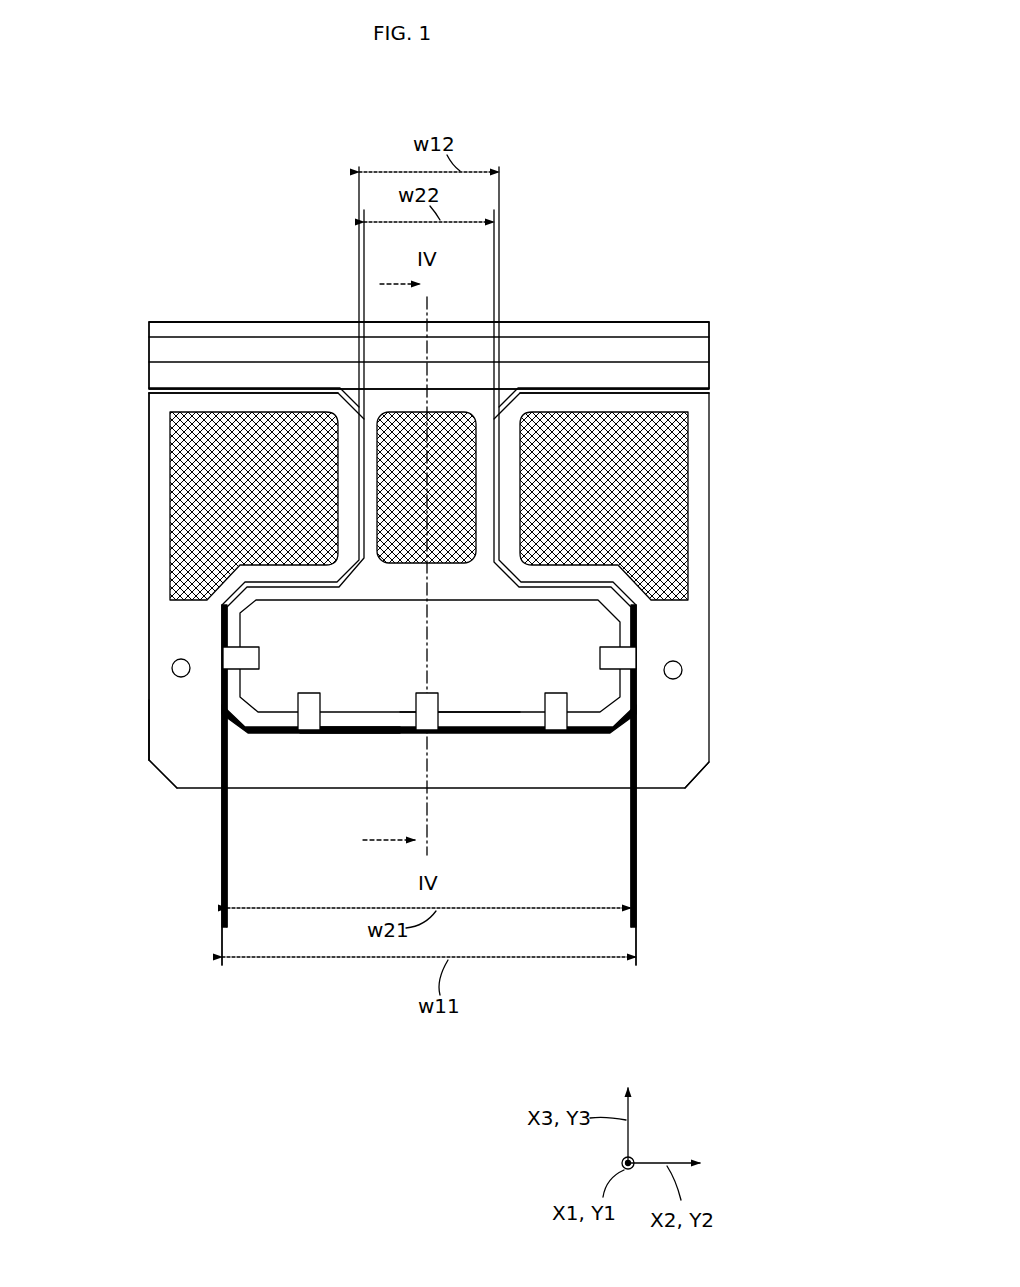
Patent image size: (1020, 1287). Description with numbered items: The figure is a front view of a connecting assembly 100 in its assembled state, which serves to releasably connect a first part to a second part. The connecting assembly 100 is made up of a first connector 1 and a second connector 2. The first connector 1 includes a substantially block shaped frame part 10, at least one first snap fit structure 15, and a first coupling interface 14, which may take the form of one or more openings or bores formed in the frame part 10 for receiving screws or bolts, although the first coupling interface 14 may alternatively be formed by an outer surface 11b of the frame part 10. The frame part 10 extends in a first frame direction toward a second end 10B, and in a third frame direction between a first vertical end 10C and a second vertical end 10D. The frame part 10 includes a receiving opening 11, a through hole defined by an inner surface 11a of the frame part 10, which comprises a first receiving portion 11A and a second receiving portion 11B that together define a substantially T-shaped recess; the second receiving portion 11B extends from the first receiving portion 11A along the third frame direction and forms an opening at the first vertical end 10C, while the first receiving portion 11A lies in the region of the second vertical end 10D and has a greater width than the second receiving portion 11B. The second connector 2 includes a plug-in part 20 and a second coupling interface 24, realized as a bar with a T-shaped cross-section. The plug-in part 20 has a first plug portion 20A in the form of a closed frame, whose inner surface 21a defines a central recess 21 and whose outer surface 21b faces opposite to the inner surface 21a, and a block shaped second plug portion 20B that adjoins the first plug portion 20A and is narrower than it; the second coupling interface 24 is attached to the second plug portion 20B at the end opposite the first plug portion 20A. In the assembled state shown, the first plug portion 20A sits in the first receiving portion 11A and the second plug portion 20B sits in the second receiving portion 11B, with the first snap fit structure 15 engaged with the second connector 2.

The connecting assembly 100 is at (146, 134).
The first connector 1 is at (147, 625).
The second connector 2 is at (144, 372).
The second coupling interface 24 is at (232, 318).
The frame part 10 is at (153, 537).
The second end 10B is at (657, 757).
The first vertical end 10C is at (590, 388).
The second vertical end 10D is at (190, 790).
The receiving opening 11 is at (262, 724).
The first receiving portion 11A is at (219, 693).
The second receiving portion 11B is at (356, 466).
The inner surface 11a is at (370, 722).
The outer surface 11b is at (170, 760).
The first coupling interface 14 is at (185, 677).
The first snap fit structure 15 is at (228, 657).
The plug-in part 20 is at (498, 720).
The first plug portion 20A is at (639, 627).
The second plug portion 20B is at (498, 483).
The central recess 21 is at (242, 624).
The inner surface 21a is at (458, 712).
The outer surface 21b is at (335, 732).